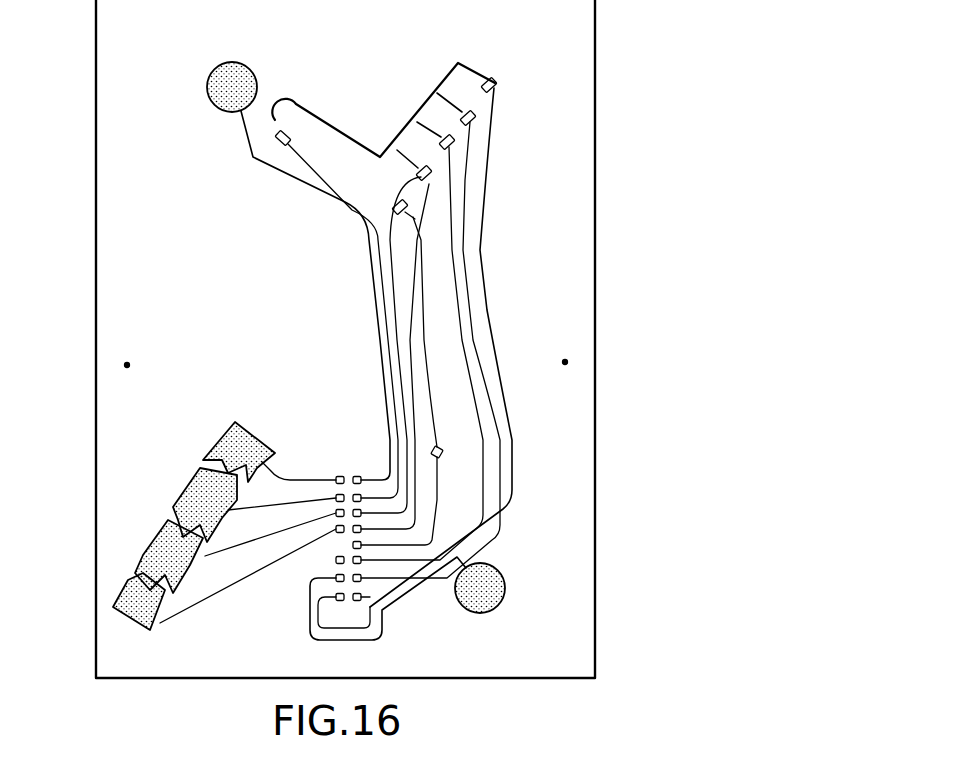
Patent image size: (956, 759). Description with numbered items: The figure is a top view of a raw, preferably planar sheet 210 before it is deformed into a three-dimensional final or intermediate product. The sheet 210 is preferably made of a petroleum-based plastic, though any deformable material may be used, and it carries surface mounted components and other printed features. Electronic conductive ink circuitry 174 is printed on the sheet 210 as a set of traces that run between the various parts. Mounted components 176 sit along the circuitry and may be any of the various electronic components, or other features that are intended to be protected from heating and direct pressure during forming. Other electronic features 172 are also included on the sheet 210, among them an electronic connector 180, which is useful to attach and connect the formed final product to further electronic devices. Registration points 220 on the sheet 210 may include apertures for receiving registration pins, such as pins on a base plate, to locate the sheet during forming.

The other electronic features 172 is at (209, 80).
The electronic conductive ink circuitry 174 is at (492, 312).
The mounted components 176 is at (276, 140).
The electronic connector 180 is at (336, 560).
The sheet 210 is at (604, 469).
The registration points 220 is at (127, 365).